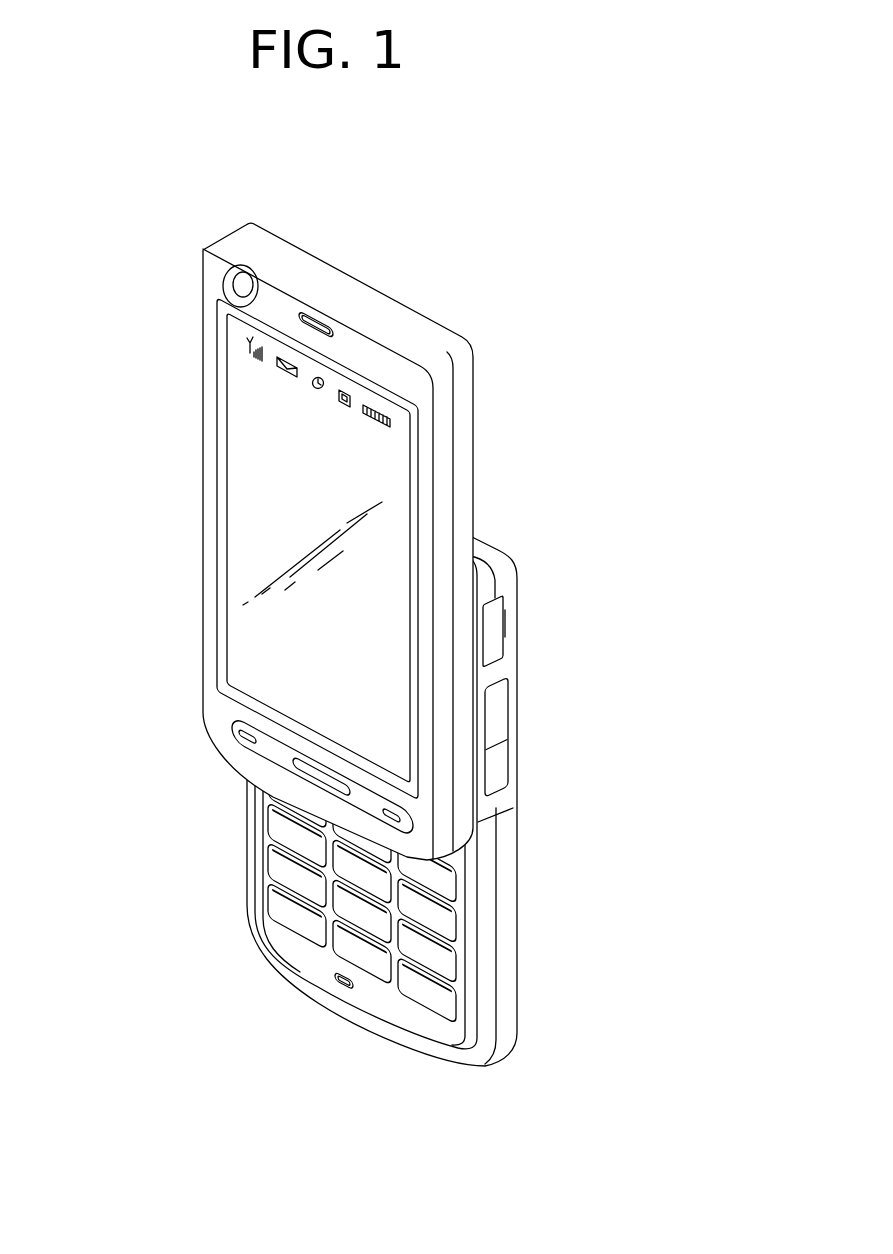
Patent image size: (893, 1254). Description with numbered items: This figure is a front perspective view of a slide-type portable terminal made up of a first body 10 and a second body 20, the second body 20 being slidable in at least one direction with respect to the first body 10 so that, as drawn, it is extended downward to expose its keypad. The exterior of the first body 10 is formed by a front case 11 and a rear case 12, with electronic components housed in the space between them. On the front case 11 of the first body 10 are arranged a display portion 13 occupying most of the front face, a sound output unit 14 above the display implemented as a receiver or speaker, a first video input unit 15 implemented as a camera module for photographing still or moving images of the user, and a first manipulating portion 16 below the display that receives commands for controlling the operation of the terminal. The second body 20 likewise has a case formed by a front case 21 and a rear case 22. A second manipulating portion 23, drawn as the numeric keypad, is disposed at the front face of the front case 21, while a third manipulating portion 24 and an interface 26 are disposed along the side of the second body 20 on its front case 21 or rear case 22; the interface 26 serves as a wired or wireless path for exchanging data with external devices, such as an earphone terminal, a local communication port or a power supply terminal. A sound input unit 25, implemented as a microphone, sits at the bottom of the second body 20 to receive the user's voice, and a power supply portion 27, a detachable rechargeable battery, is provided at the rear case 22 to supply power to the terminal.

The first body 10 is at (160, 358).
The front case 11 is at (443, 440).
The rear case 12 is at (466, 404).
The display portion 13 is at (250, 452).
The sound output unit 14 is at (316, 316).
The first video input unit 15 is at (243, 284).
The first manipulating portion 16 is at (243, 733).
The second body 20 is at (234, 838).
The front case 21 is at (482, 570).
The rear case 22 is at (507, 592).
The second manipulating portion 23 is at (280, 897).
The third manipulating portion 24 is at (502, 765).
The sound input unit 25 is at (345, 990).
The interface 26 is at (497, 625).
The power supply portion 27 is at (510, 908).